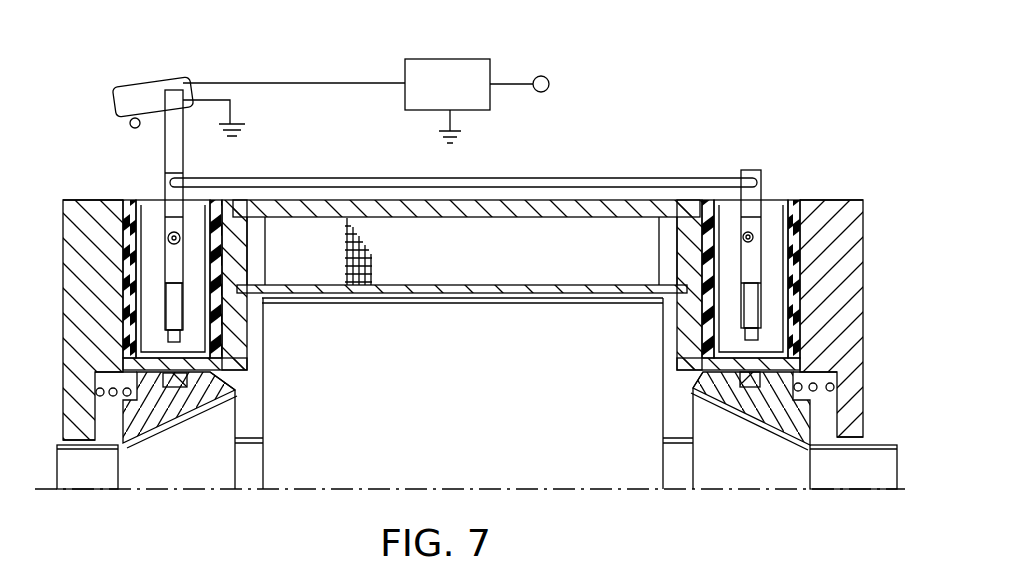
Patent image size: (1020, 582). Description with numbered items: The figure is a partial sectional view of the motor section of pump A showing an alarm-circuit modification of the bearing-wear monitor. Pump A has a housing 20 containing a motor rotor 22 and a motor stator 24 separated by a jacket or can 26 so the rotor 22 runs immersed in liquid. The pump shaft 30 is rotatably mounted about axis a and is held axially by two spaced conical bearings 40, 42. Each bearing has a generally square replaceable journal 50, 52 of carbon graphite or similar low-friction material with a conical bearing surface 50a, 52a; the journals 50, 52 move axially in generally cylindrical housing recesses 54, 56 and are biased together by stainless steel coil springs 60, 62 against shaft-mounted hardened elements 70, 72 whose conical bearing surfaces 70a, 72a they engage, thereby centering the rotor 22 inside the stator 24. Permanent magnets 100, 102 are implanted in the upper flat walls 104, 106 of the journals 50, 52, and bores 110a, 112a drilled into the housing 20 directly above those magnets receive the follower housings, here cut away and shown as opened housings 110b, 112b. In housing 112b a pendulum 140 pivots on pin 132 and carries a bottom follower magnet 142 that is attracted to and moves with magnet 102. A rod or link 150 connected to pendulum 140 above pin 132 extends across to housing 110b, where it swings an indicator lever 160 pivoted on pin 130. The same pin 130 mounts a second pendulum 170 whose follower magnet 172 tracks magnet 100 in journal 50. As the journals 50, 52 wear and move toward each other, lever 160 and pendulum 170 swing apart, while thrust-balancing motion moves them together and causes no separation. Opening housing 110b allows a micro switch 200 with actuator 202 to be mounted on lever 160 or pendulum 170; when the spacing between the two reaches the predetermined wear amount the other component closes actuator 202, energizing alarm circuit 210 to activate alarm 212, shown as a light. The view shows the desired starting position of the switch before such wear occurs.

The housing 20 is at (838, 198).
The motor rotor 22 is at (525, 322).
The motor stator 24 is at (578, 236).
The jacket or can 26 is at (458, 293).
The pump shaft 30 is at (871, 470).
The conical bearing 40 is at (242, 422).
The conical bearing 42 is at (678, 466).
The outer replaceable journal 50 is at (214, 385).
The conical bearing surface 50a is at (196, 405).
The outer replaceable journal 52 is at (703, 378).
The conical bearing surface 52a is at (720, 404).
The housing recess 54 is at (99, 396).
The housing recess 56 is at (822, 370).
The coil spring 60 is at (112, 396).
The coil spring 62 is at (814, 394).
The shaft mounted element 70 is at (184, 491).
The conical bearing surface 70a is at (165, 417).
The shaft mounted element 72 is at (729, 491).
The conical bearing surface 72a is at (763, 410).
The permanent magnet 100 is at (232, 370).
The permanent magnet 102 is at (758, 378).
The upper flat wall 104 is at (136, 299).
The upper flat wall 106 is at (790, 360).
The bore 110a is at (214, 247).
The opened housing 110b is at (127, 199).
The bore 112a is at (710, 314).
The opened housing 112b is at (795, 198).
The pivot pin 130 is at (179, 235).
The pivot pin 132 is at (743, 240).
The pendulum 140 is at (754, 170).
The follower magnet 142 is at (746, 331).
The rod or link 150 is at (488, 185).
The indicator lever 160 is at (186, 149).
The pendulum 170 is at (184, 299).
The follower magnet 172 is at (181, 336).
The micro switch 200 is at (150, 80).
The actuator 202 is at (129, 126).
The alarm circuit 210 is at (441, 58).
The alarm 212 is at (546, 77).
The pump A is at (656, 72).
The axis a is at (598, 490).